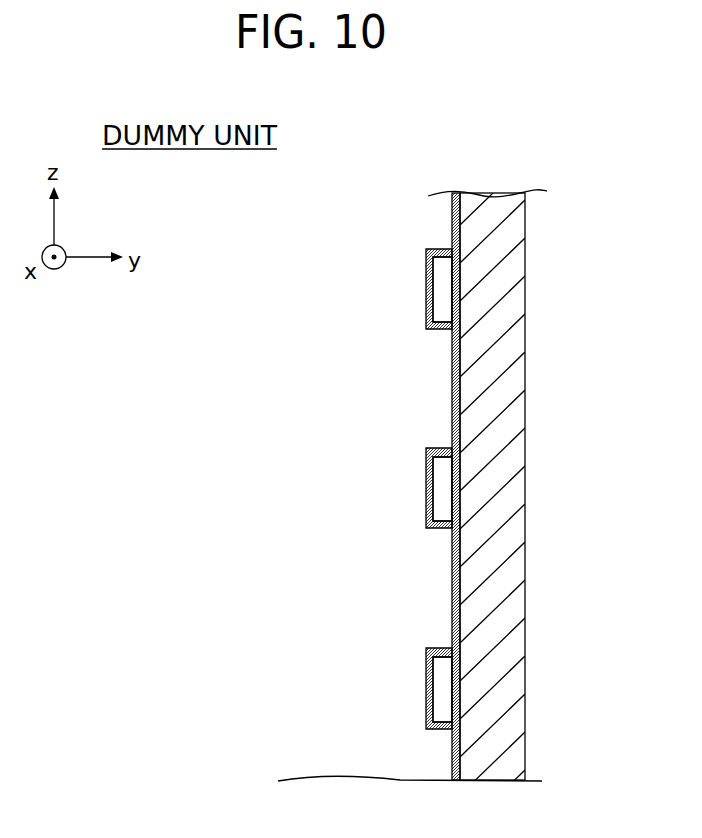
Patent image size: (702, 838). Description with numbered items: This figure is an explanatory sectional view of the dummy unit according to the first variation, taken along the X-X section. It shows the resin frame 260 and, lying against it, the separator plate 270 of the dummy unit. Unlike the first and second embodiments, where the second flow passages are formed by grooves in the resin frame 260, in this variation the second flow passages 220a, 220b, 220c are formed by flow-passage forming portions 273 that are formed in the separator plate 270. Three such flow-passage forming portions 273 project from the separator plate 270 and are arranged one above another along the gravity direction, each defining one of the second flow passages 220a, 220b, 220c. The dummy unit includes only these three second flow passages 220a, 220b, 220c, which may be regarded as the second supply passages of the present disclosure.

The resin frame 260 is at (527, 219).
The separator plate 270 is at (445, 209).
The flow-passage forming portion 273 is at (426, 288).
The second flow passage 220a is at (450, 697).
The second flow passage 220b is at (450, 495).
The second flow passage 220c is at (442, 294).